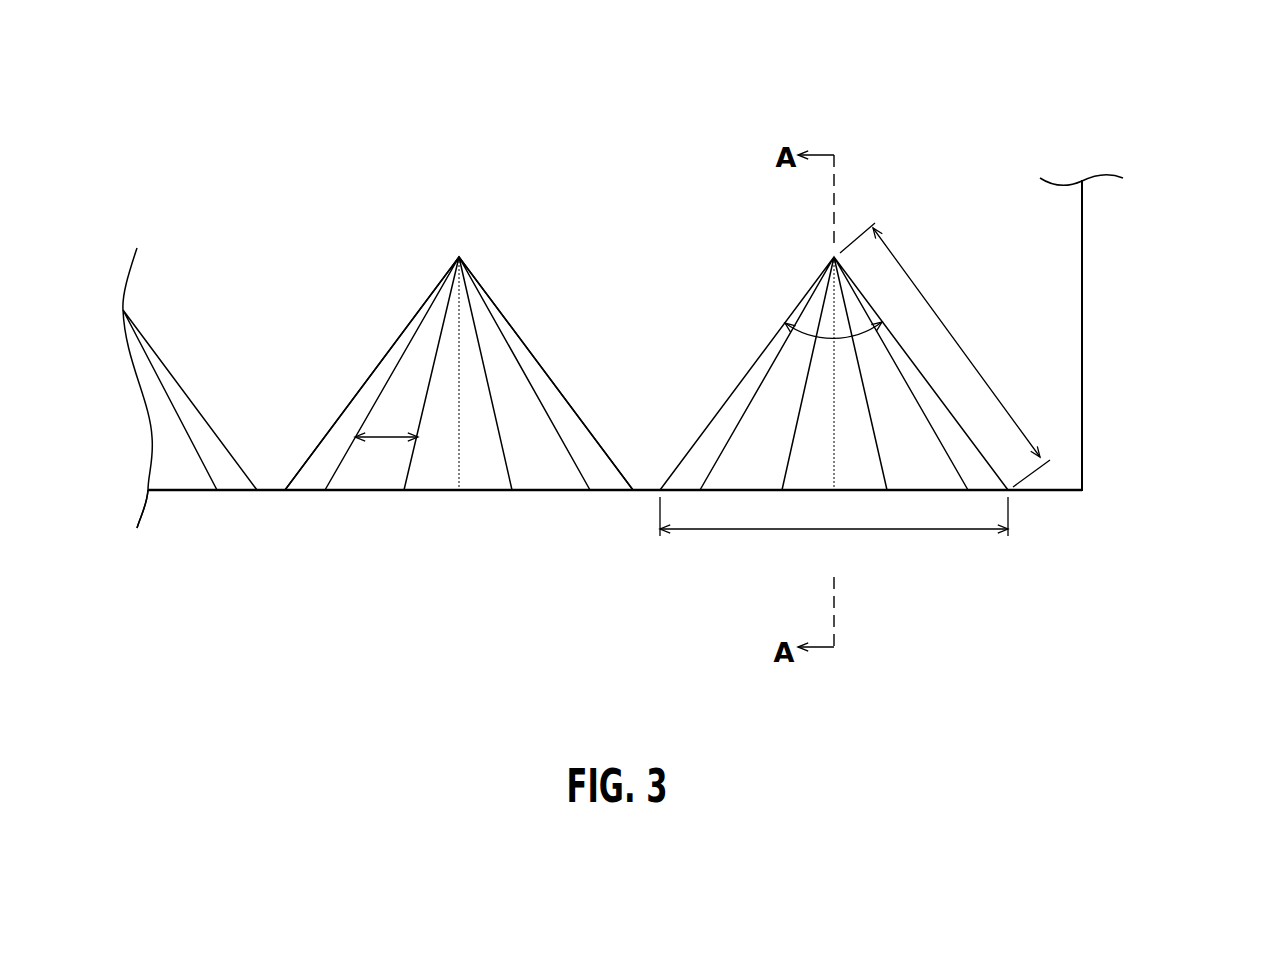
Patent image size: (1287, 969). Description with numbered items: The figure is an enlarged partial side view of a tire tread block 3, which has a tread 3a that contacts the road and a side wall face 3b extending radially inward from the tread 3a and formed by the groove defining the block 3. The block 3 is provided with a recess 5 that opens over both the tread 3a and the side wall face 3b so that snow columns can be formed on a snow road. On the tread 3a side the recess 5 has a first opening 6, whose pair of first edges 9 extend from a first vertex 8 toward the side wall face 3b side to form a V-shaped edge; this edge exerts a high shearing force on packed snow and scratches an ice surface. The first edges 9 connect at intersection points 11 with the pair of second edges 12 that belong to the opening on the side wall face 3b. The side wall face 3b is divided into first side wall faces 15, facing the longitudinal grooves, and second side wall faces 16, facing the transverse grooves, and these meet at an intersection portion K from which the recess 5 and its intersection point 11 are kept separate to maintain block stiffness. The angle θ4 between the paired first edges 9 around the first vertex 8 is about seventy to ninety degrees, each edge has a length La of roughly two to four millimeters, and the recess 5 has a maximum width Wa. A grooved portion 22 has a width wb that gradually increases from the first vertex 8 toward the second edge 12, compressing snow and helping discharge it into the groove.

The block 3 is at (1098, 502).
The tread 3a is at (1028, 248).
The side wall face 3b is at (183, 495).
The angle θ 4 is at (810, 348).
The recess 5 is at (453, 502).
The first opening 6 is at (412, 288).
The first vertex 8 is at (459, 257).
The first edges 9 is at (395, 340).
The intersection points 11 is at (1007, 492).
The second edges 12 is at (285, 490).
The first side wall faces 15 is at (1062, 492).
The second side wall faces 16 is at (1082, 315).
The grooved portion 22 is at (373, 463).
The intersection portion K is at (1082, 490).
The length La is at (945, 355).
The maximum width Wa is at (834, 530).
The width wb is at (385, 435).